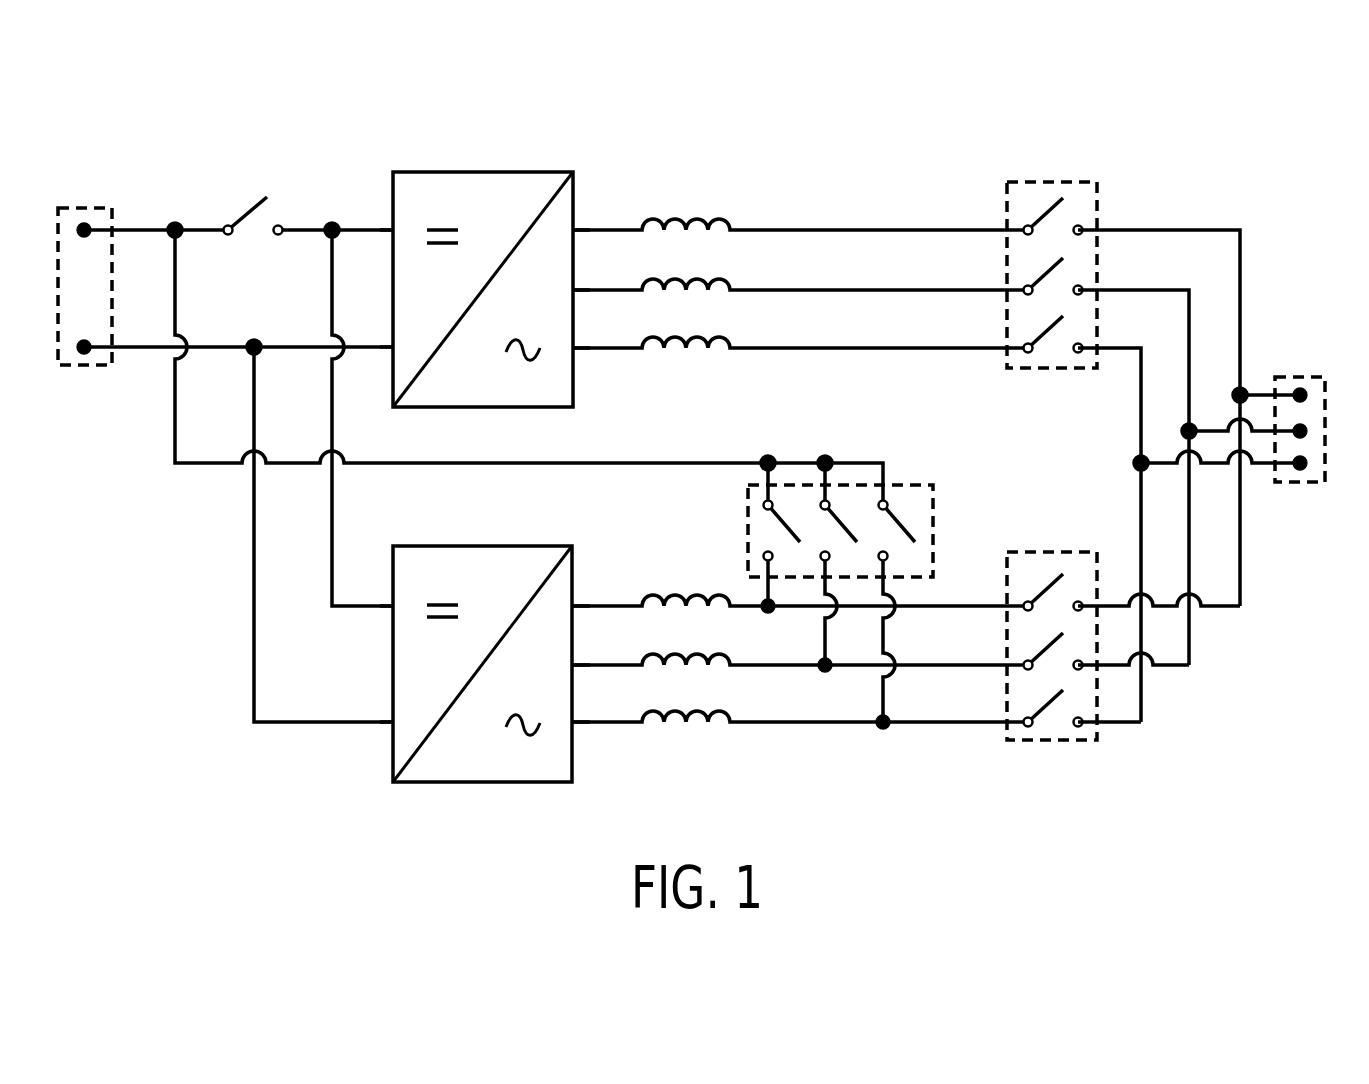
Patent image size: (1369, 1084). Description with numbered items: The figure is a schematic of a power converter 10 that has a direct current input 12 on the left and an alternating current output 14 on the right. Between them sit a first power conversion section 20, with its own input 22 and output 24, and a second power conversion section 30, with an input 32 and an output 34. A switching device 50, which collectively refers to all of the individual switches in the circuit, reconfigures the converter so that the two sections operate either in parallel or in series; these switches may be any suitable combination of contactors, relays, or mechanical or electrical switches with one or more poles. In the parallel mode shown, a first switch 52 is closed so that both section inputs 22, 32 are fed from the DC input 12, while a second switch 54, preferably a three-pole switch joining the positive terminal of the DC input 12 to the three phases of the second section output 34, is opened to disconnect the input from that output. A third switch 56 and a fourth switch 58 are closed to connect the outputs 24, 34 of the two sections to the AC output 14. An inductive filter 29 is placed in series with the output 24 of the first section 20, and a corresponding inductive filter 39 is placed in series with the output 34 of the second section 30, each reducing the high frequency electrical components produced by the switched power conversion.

The power converter 10 is at (1268, 168).
The direct current input 12 is at (82, 372).
The alternating current output 14 is at (1300, 490).
The first power conversion section 20 is at (483, 172).
The input of first power conversion section 22 is at (380, 220).
The output of first power conversion section 24 is at (580, 218).
The inductive filter 29 is at (708, 210).
The second power conversion section 30 is at (483, 546).
The input of second power conversion section 32 is at (383, 733).
The output of second power conversion section 34 is at (579, 737).
The inductive filter 39 is at (718, 737).
The switching device 50 is at (232, 196).
The first switch 52 is at (246, 213).
The second switch 54 is at (934, 525).
The third switch 56 is at (1083, 182).
The fourth switch 58 is at (1050, 552).